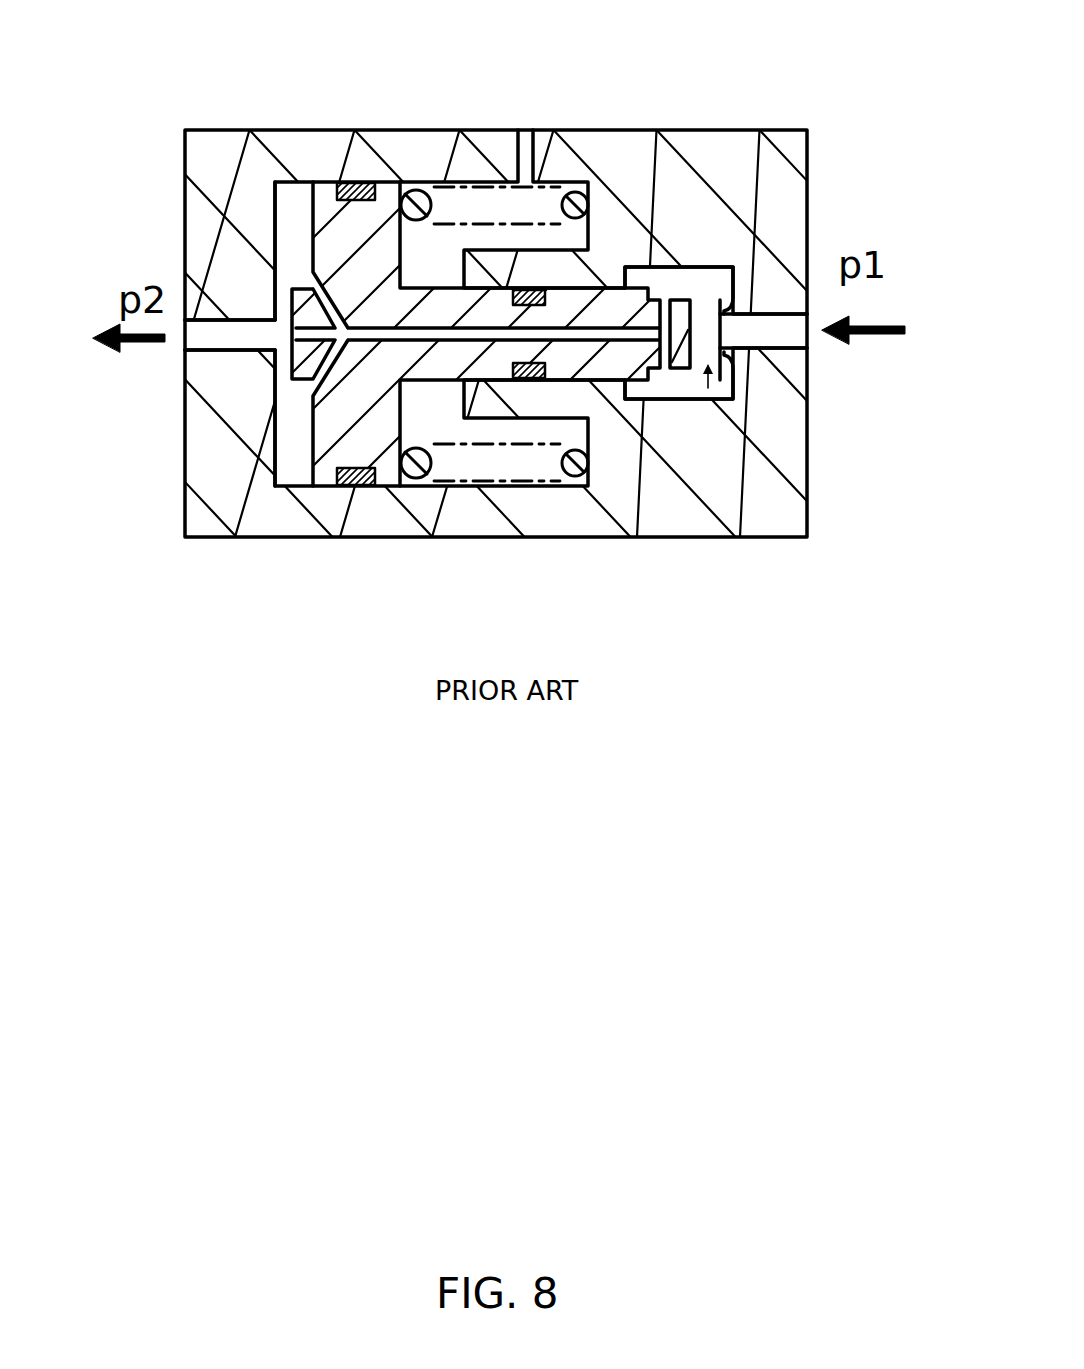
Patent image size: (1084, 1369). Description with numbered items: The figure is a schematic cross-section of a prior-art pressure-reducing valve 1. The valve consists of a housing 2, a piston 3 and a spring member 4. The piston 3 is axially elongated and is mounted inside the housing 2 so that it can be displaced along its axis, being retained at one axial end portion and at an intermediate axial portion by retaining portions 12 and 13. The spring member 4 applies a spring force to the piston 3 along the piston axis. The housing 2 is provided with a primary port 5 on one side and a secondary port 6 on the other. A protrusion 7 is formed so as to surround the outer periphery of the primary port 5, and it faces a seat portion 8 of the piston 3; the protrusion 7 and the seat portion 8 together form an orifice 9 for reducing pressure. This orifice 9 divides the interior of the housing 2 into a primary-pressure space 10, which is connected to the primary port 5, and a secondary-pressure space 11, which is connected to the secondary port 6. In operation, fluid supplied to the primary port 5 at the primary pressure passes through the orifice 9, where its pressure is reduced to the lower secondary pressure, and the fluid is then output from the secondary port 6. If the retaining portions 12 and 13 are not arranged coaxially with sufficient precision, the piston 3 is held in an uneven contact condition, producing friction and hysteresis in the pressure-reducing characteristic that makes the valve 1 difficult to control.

The pressure-reducing valve 1 is at (708, 58).
The housing 2 is at (421, 143).
The piston 3 is at (578, 292).
The spring member 4 is at (572, 480).
The primary port 5 is at (813, 350).
The secondary port 6 is at (183, 352).
The protrusion 7 is at (733, 293).
The seat portion 8 is at (682, 362).
The orifice 9 is at (707, 393).
The primary-pressure space 10 is at (705, 313).
The secondary-pressure space 11 is at (286, 476).
The retaining portion 12 is at (332, 178).
The retaining portion 13 is at (484, 375).